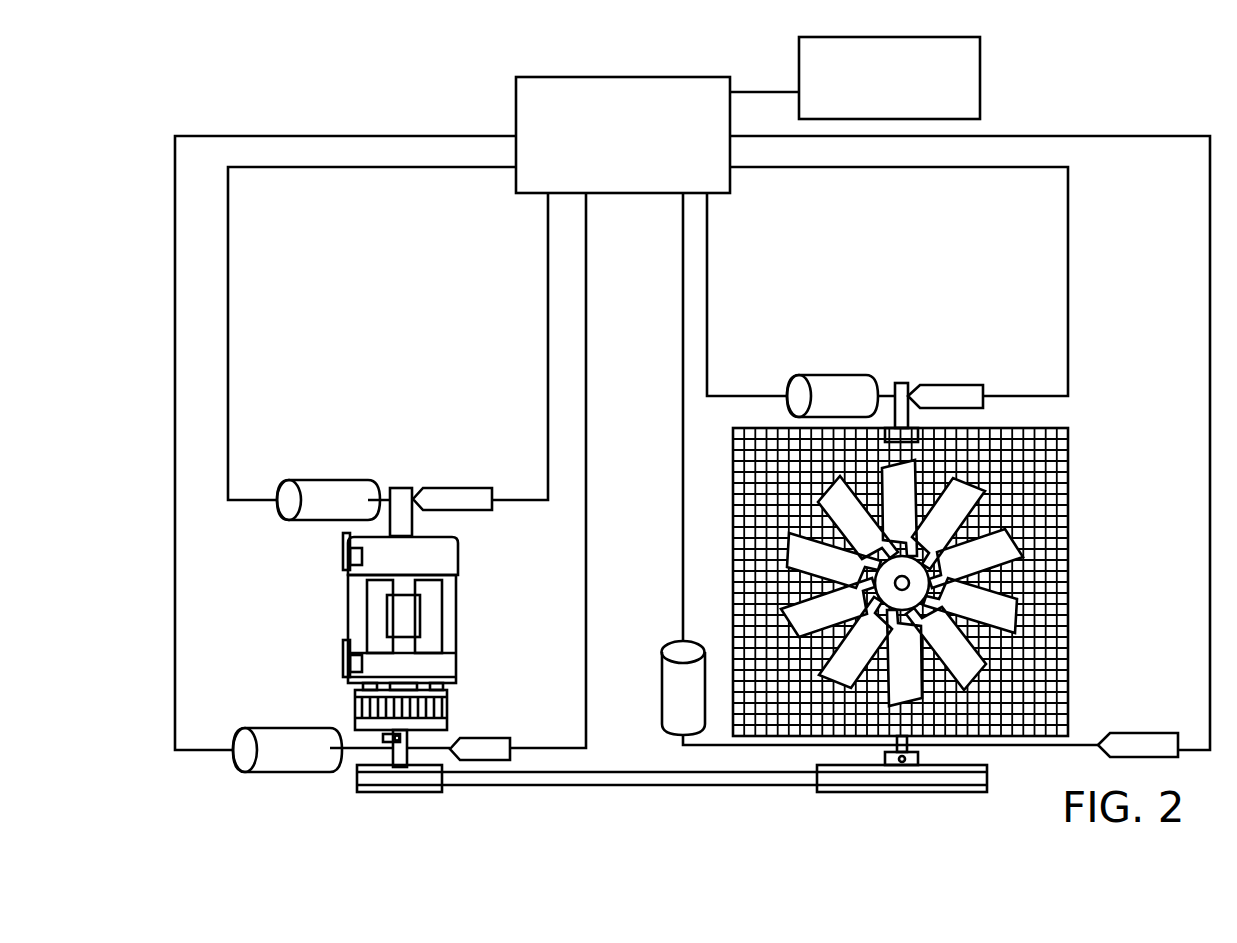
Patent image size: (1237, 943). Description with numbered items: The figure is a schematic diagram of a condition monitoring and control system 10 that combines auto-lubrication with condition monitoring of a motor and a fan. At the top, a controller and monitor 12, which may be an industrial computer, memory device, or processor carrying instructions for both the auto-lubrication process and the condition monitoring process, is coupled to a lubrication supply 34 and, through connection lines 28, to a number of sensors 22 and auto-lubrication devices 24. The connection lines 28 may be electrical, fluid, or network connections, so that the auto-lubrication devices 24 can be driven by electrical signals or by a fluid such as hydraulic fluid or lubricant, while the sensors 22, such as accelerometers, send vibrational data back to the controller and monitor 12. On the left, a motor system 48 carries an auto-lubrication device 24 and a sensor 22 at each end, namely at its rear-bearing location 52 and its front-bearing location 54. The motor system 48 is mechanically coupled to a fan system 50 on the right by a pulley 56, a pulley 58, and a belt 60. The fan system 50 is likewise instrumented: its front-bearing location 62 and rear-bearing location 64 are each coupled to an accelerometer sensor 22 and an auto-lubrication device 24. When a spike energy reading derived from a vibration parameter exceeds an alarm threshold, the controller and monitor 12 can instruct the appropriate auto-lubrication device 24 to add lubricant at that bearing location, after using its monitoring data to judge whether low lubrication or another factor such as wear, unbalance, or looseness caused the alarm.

The condition monitoring and control system 10 is at (230, 93).
The controller and monitor 12 is at (514, 100).
The sensors 22 is at (456, 488).
The auto-lubrication device 24 is at (323, 480).
The connection lines 28 is at (228, 270).
The lubrication supply 34 is at (983, 76).
The motor system 48 is at (348, 605).
The fan system 50 is at (1050, 562).
The rear-bearing location 52 is at (401, 488).
The front-bearing location 54 is at (385, 737).
The pulley 56 is at (400, 792).
The pulley 58 is at (899, 792).
The belt 60 is at (645, 778).
The front-bearing location 62 is at (910, 748).
The rear-bearing location 64 is at (902, 383).